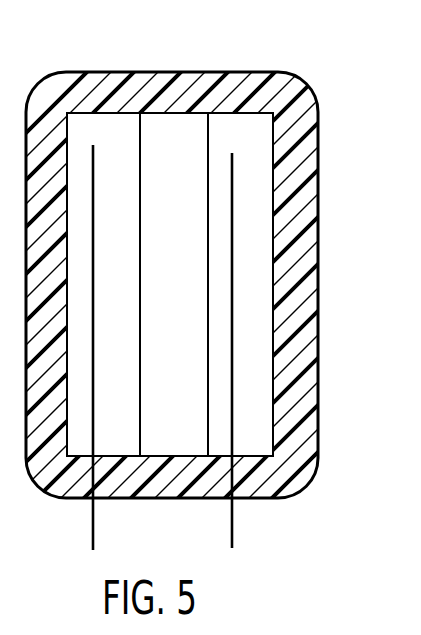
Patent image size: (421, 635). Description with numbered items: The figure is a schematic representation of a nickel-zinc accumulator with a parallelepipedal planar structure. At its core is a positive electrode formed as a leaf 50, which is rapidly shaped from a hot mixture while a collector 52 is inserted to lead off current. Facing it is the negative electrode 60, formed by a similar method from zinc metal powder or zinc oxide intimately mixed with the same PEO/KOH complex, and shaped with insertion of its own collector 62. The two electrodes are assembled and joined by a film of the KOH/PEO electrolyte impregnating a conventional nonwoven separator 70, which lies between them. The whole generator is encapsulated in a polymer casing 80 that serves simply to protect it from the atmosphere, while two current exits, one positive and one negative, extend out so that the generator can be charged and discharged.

The polymer casing 80 is at (318, 184).
The leaf 50 is at (101, 112).
The nonwoven separator 70 is at (173, 112).
The negative electrode 60 is at (243, 112).
The collector 52 is at (92, 528).
The collector 62 is at (232, 527).